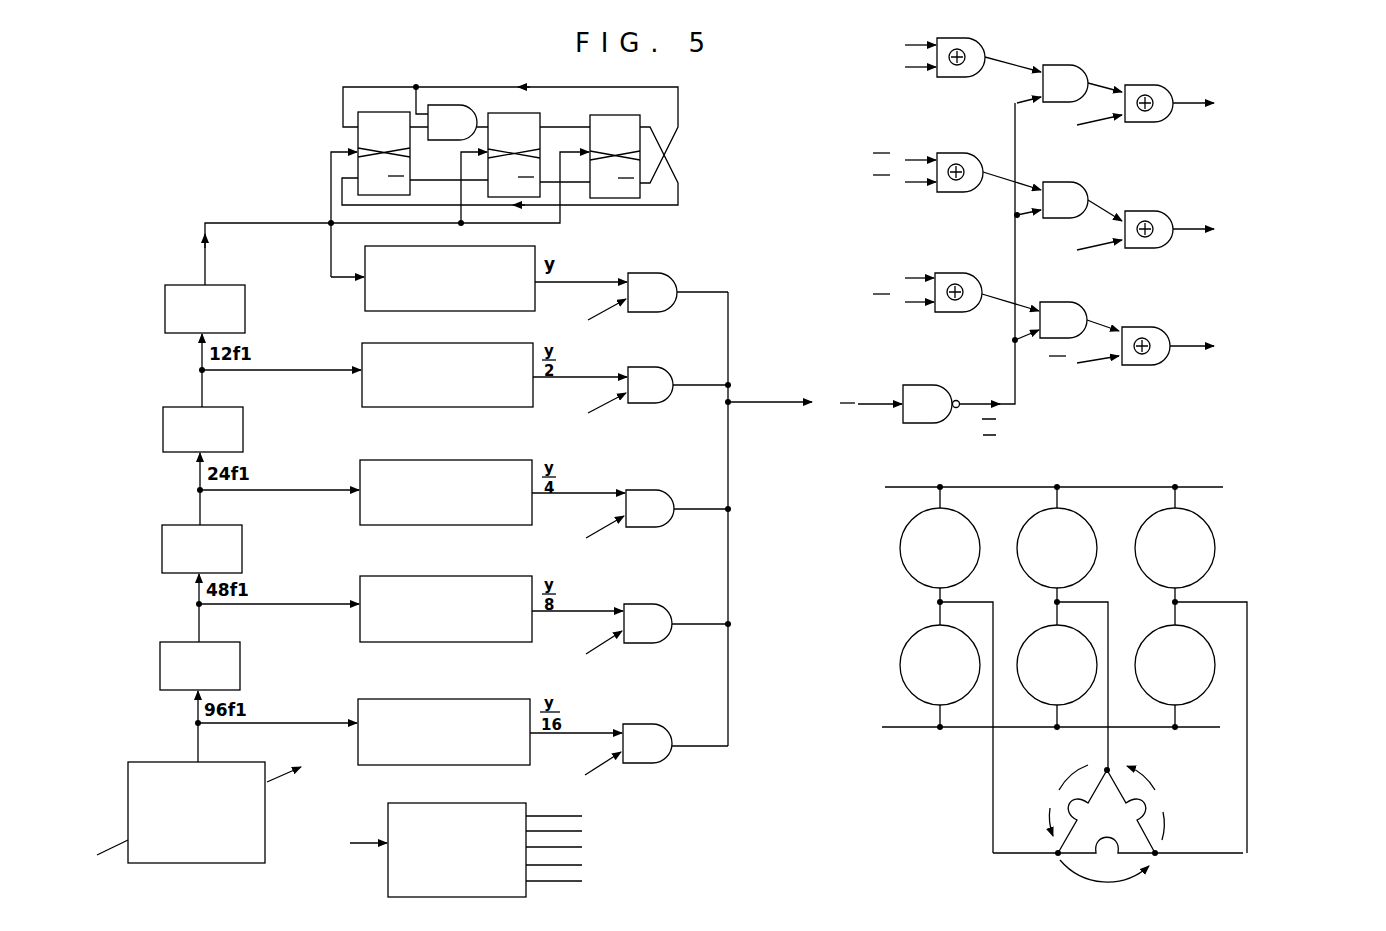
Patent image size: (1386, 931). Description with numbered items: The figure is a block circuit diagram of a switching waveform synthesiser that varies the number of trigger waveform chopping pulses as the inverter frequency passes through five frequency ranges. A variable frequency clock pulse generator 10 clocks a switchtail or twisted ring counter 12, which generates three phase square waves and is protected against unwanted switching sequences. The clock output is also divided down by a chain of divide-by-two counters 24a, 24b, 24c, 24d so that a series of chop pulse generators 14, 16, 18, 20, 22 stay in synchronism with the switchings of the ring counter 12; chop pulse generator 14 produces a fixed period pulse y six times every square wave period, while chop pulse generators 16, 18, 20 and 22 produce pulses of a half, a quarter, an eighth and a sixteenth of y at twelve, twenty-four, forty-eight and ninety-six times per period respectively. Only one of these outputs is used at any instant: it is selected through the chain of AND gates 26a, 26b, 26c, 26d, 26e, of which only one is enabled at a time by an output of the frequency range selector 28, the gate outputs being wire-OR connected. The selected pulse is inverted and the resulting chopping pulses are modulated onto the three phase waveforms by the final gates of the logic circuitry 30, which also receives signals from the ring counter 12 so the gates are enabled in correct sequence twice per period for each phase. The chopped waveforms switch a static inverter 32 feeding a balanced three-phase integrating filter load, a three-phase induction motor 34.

The clock pulse generator 10 is at (200, 863).
The twisted ring counter 12 is at (278, 120).
The chop pulse generator 14 is at (365, 296).
The chop pulse generator 16 is at (362, 394).
The chop pulse generator 18 is at (360, 513).
The chop pulse generator 20 is at (360, 626).
The chop pulse generator 22 is at (365, 765).
The divide-by-two counter 24a is at (166, 666).
The divide-by-two counter 24b is at (169, 549).
The divide-by-two counter 24c is at (170, 429).
The divide-by-two counter 24d is at (171, 309).
The AND gate 26a is at (658, 304).
The AND gate 26b is at (658, 399).
The AND gate 26c is at (657, 521).
The AND gate 26d is at (657, 636).
The AND gate 26e is at (656, 756).
The frequency range selector 28 is at (388, 875).
The logic circuitry 30 is at (1140, 386).
The static inverter 32 is at (1238, 572).
The three-phase induction motor 34 is at (1194, 818).